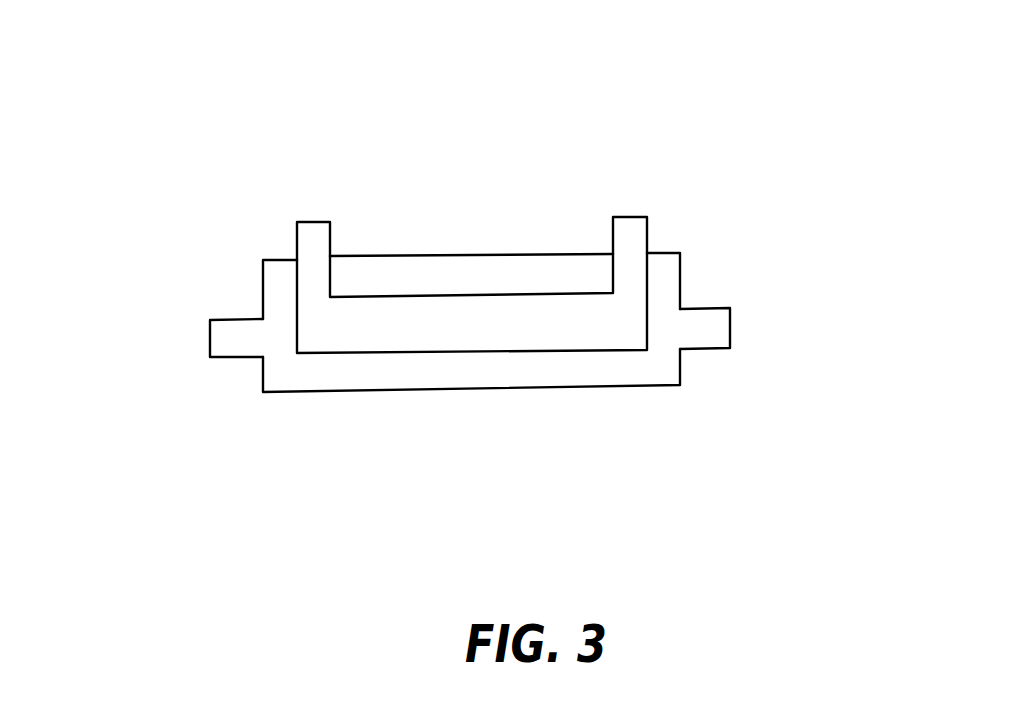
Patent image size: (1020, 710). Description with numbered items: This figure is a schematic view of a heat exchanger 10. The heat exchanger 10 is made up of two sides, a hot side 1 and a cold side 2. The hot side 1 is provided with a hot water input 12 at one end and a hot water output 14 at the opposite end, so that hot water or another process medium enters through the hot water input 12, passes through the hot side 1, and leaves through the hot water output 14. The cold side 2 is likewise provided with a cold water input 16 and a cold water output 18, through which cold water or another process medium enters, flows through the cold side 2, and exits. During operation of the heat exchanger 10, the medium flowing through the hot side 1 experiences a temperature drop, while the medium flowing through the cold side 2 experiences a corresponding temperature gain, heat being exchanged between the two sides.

The hot side 1 is at (521, 289).
The cold side 2 is at (468, 305).
The heat exchanger 10 is at (479, 258).
The hot water input 12 is at (180, 341).
The hot water output 14 is at (738, 326).
The cold water input 16 is at (627, 187).
The cold water output 18 is at (313, 207).